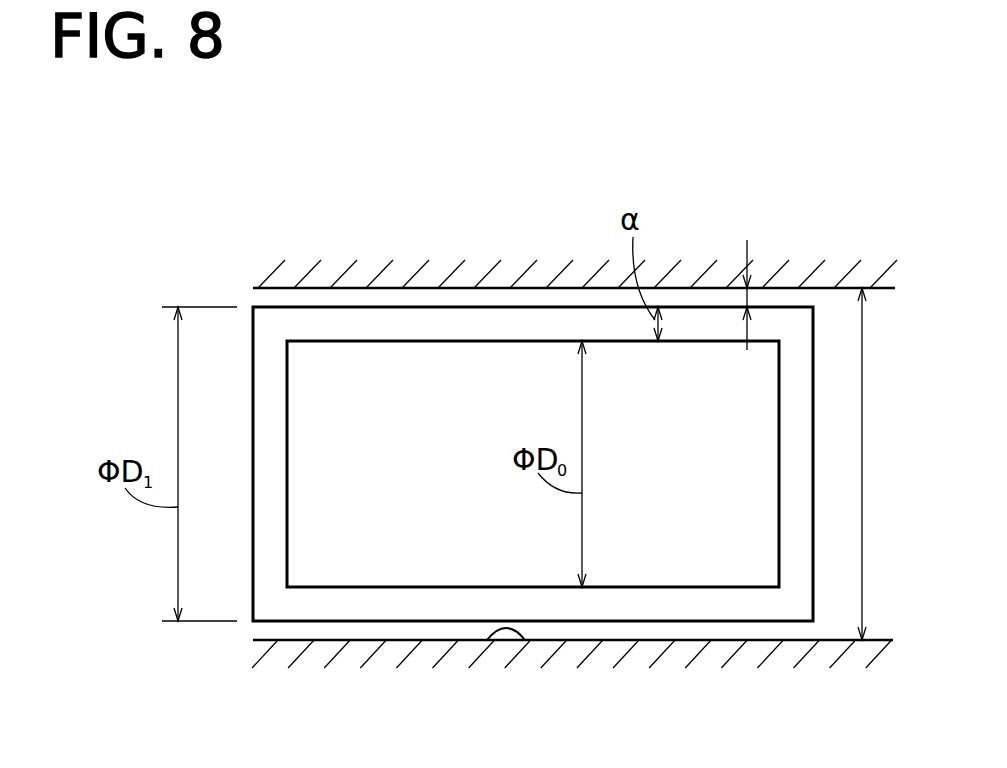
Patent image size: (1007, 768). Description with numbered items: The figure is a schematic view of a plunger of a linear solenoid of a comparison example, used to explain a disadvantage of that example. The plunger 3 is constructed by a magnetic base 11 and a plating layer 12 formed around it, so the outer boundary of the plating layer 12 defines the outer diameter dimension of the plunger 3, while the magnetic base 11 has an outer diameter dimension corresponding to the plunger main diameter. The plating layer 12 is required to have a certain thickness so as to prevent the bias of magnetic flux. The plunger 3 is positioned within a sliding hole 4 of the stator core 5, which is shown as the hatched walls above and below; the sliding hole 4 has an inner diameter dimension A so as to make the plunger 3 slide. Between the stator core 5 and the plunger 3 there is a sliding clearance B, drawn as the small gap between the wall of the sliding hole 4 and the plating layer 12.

The plunger 3 is at (533, 385).
The magnetic base 11 is at (398, 380).
The plating layer 12 is at (457, 327).
The sliding hole 4 is at (523, 640).
The stator core 5 is at (440, 652).
The inner diameter dimension A is at (862, 490).
The sliding clearance B is at (749, 300).